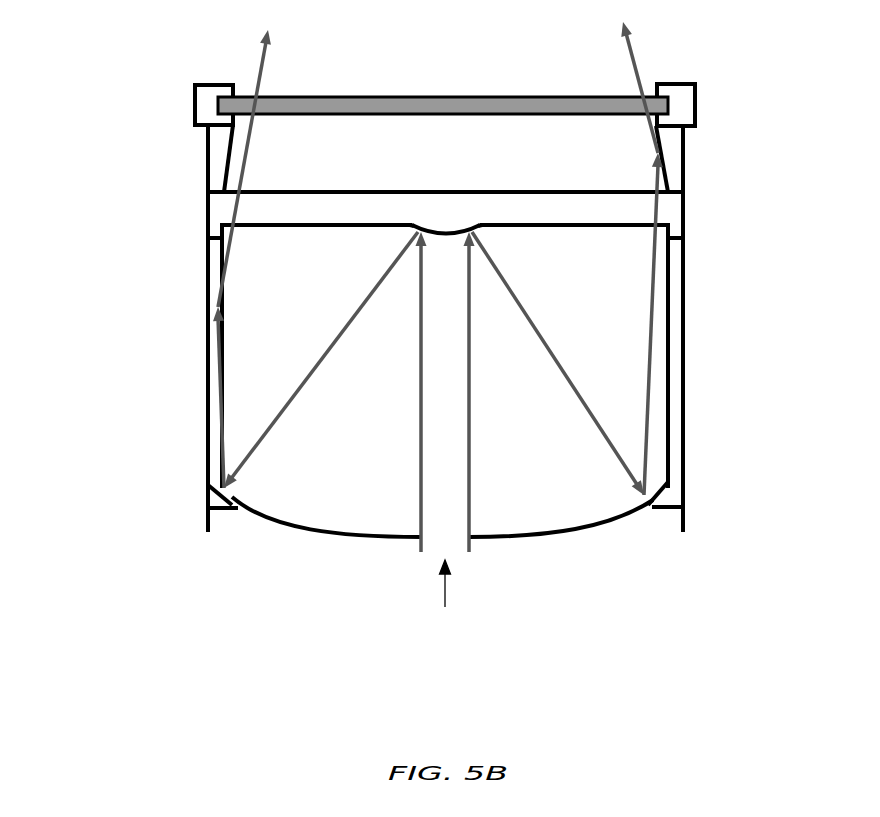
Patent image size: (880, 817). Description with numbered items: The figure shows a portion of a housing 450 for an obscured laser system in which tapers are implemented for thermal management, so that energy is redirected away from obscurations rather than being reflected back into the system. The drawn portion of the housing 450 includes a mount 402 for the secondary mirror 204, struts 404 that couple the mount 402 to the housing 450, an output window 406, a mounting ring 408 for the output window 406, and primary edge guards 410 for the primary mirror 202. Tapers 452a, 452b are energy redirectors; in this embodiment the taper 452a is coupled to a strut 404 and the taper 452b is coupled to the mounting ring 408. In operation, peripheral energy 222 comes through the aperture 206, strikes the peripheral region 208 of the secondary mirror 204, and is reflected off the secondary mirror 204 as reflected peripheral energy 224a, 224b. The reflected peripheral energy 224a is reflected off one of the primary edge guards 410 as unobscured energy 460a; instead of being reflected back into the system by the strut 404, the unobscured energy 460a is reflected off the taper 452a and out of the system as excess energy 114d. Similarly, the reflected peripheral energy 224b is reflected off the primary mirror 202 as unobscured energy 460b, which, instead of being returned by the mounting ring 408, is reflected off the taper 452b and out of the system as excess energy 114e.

The housing 450 is at (103, 88).
The excess energy 114d is at (258, 78).
The excess energy 114e is at (633, 62).
The output window 406 is at (388, 95).
The mounting ring 408 is at (697, 88).
The mount 402 is at (355, 190).
The struts 404 is at (210, 233).
The secondary mirror 204 is at (445, 230).
The taper 452a is at (206, 296).
The taper 452b is at (683, 160).
The peripheral region 208 is at (412, 228).
The unobscured energy 460a is at (222, 388).
The unobscured energy 460b is at (650, 350).
The reflected peripheral energy 224a is at (302, 392).
The reflected peripheral energy 224b is at (567, 390).
The peripheral energy 222 is at (398, 488).
The primary edge guards 410 is at (222, 507).
The primary mirror 202 is at (545, 537).
The aperture 206 is at (445, 607).